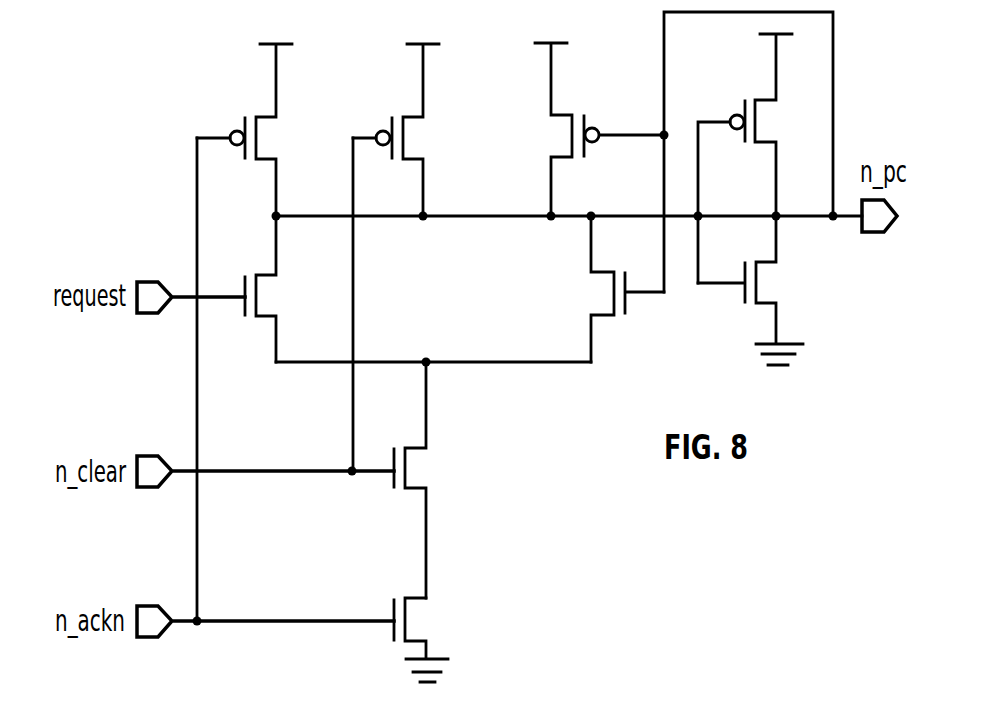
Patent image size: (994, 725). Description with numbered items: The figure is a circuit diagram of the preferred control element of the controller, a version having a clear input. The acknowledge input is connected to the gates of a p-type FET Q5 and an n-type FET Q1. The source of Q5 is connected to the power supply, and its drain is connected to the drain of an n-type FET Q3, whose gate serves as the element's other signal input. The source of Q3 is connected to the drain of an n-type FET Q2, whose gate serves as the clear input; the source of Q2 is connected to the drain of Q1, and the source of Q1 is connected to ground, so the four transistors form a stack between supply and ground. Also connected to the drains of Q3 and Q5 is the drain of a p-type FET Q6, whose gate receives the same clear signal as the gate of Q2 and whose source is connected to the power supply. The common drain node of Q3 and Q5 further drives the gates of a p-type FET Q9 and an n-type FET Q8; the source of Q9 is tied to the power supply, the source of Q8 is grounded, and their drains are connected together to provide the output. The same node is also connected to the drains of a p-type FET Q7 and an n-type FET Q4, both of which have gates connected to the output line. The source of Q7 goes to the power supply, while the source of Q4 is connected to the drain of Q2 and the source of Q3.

The n-type FET Q1 is at (424, 640).
The n-type FET Q2 is at (425, 480).
The n-type FET Q3 is at (275, 289).
The n-type FET Q4 is at (612, 289).
The p-type FET Q5 is at (250, 130).
The p-type FET Q6 is at (402, 130).
The p-type FET Q7 is at (593, 129).
The n-type FET Q8 is at (750, 290).
The p-type FET Q9 is at (749, 158).